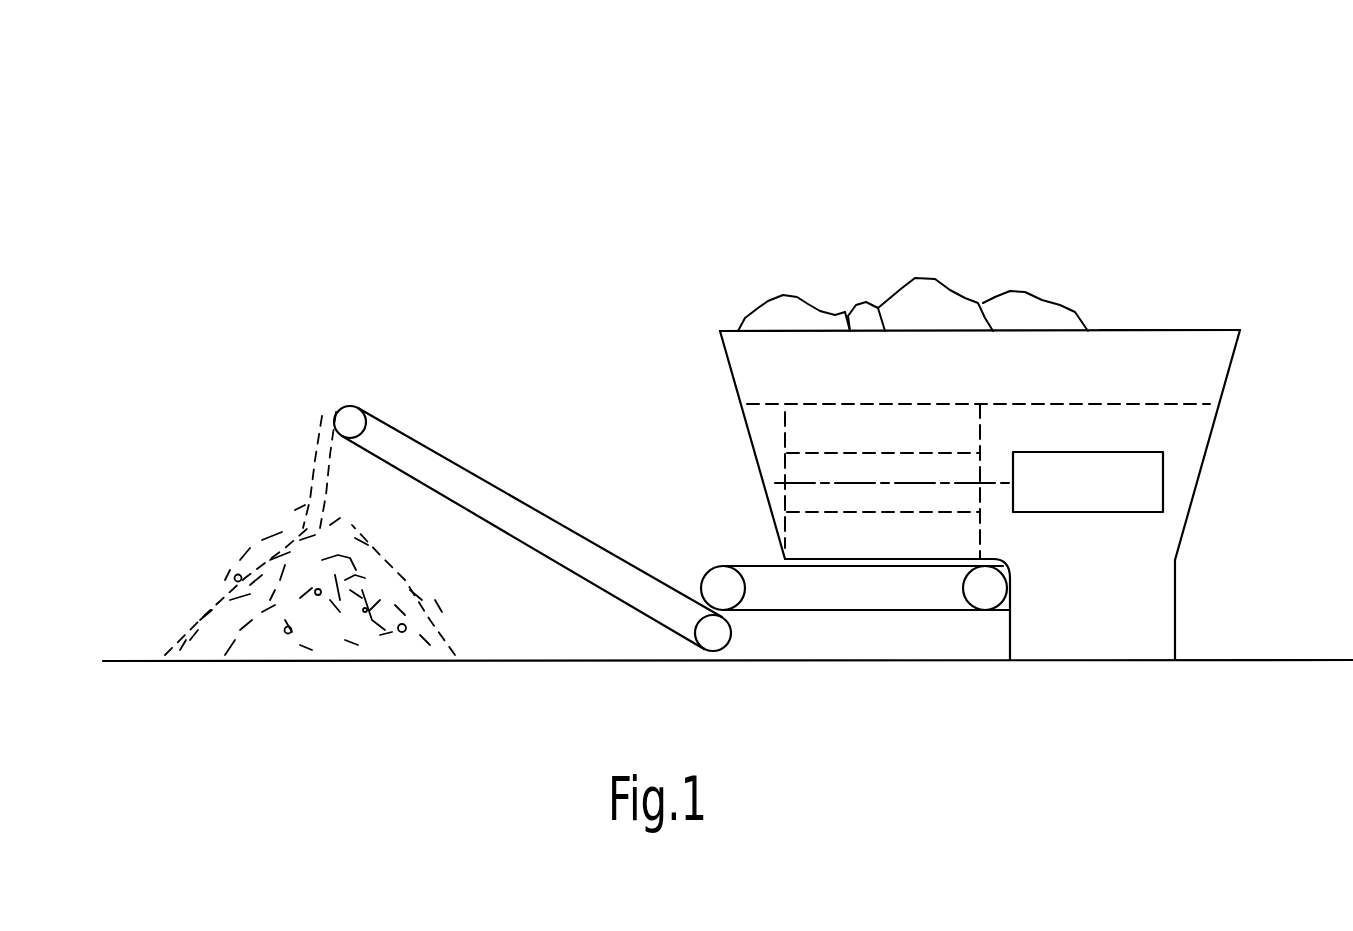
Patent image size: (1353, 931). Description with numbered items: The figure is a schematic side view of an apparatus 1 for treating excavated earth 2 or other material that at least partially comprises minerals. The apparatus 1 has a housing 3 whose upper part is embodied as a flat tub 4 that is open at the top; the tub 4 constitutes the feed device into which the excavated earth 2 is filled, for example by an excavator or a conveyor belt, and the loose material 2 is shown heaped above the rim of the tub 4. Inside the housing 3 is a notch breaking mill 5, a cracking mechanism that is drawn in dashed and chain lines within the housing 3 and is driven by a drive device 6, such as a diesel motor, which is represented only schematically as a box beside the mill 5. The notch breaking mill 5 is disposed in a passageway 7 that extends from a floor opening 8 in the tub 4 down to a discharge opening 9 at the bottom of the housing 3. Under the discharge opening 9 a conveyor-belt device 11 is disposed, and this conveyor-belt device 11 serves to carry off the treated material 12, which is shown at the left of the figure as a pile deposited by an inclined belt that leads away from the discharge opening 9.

The apparatus 1 is at (1043, 192).
The excavated earth 2 is at (909, 305).
The housing 3 is at (1183, 340).
The flat tub 4 is at (1105, 320).
The notch breaking mill 5 is at (813, 502).
The drive device 6 is at (1145, 480).
The passageway 7 is at (812, 423).
The floor opening 8 is at (862, 404).
The discharge opening 9 is at (812, 548).
The conveyor-belt device 11 is at (822, 611).
The treated material 12 is at (340, 585).